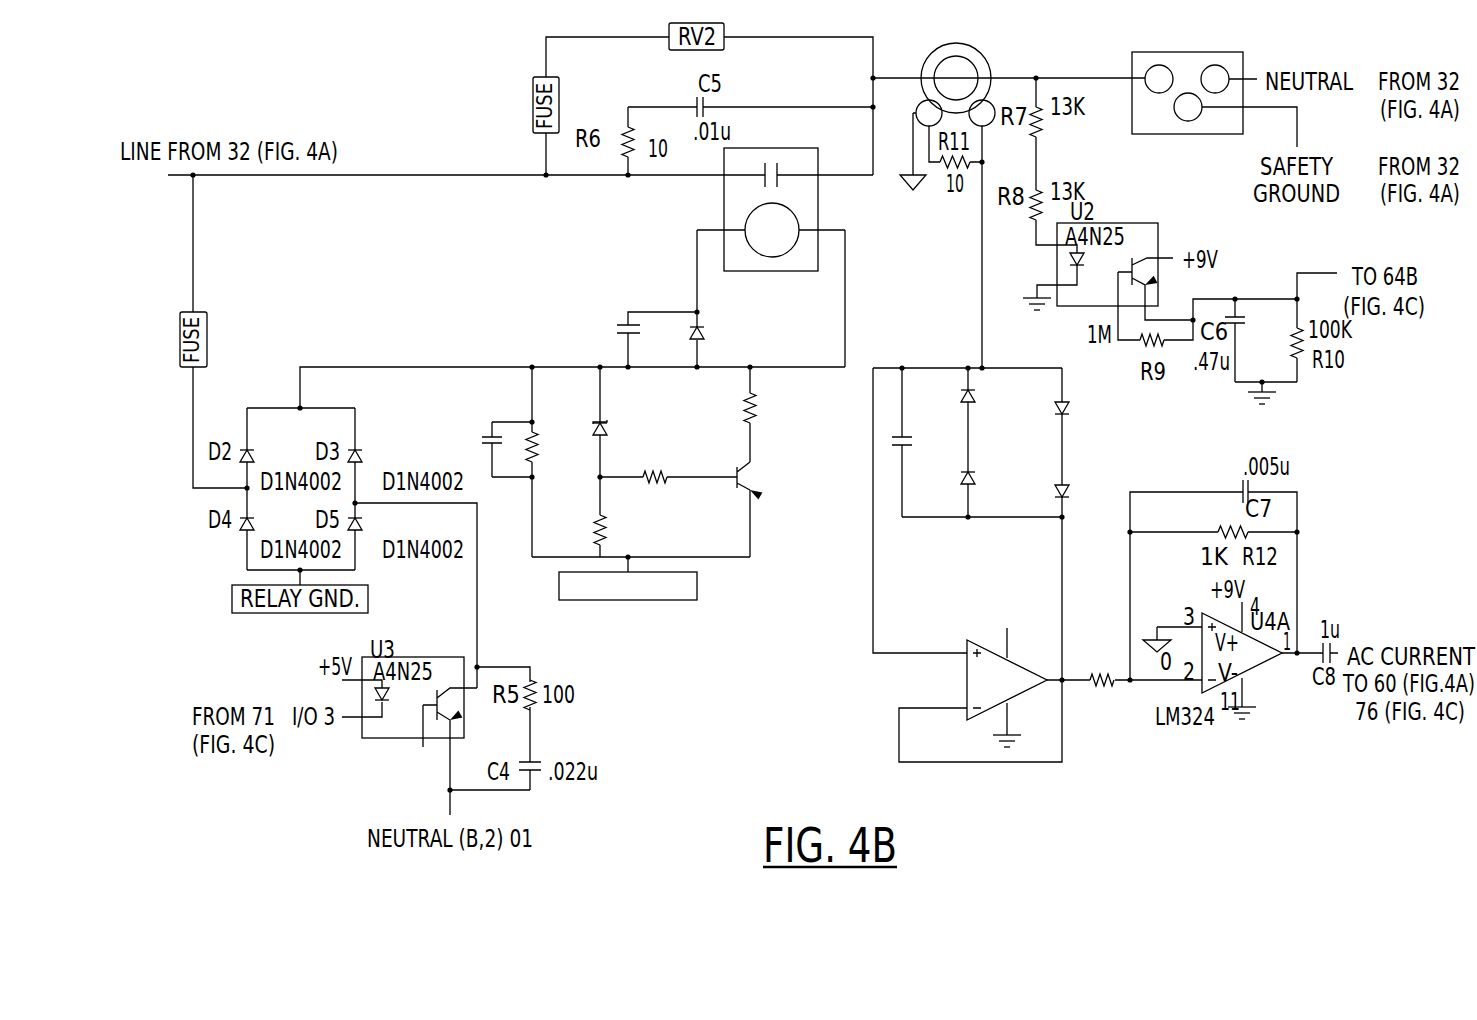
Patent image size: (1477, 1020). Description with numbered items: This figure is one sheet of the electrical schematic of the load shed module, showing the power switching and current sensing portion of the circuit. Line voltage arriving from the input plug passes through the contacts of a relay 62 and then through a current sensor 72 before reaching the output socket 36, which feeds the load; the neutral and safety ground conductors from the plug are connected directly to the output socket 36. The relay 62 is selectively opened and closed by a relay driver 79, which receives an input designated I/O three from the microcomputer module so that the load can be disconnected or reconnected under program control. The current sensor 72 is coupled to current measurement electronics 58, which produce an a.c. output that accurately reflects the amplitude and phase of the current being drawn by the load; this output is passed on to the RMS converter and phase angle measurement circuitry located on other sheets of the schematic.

The current sensor 72 is at (977, 60).
The output socket 36 is at (1228, 52).
The relay 62 is at (724, 193).
The relay driver 79 is at (641, 628).
The current measurement electronics 58 is at (880, 700).